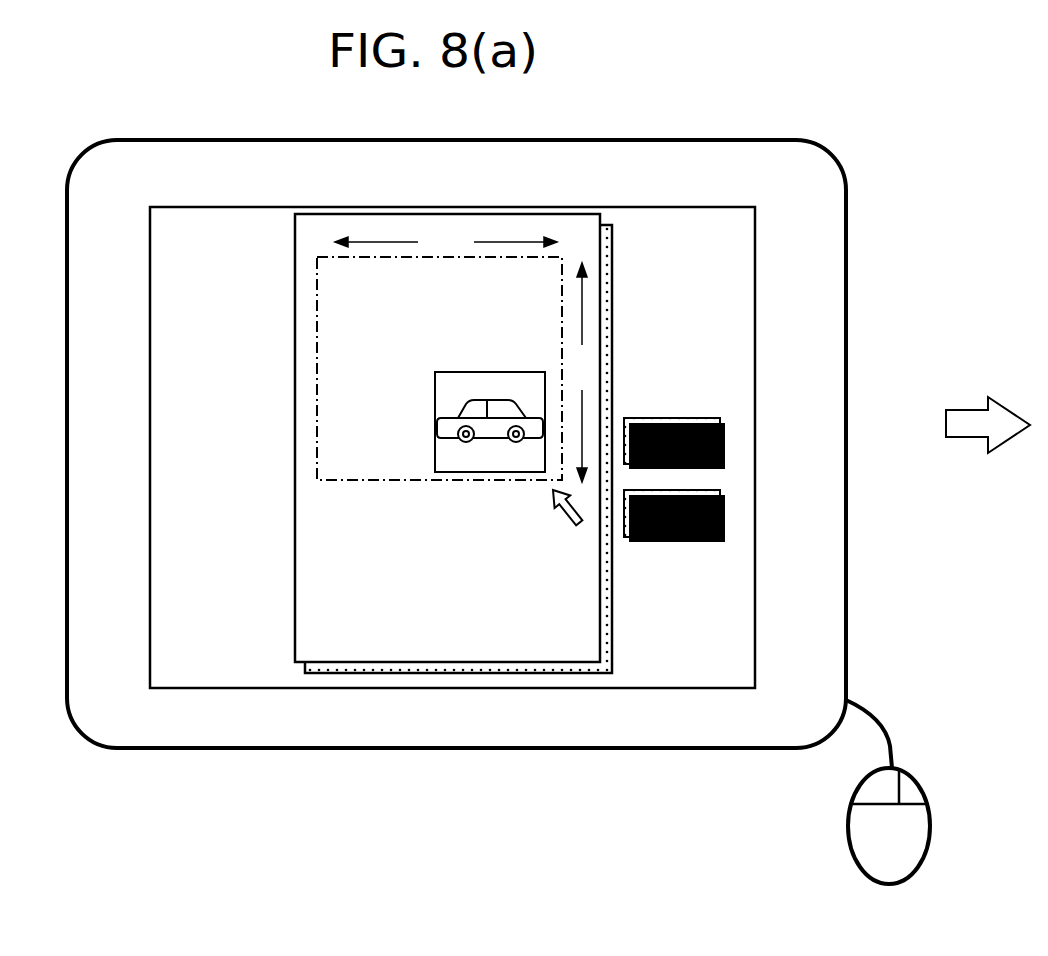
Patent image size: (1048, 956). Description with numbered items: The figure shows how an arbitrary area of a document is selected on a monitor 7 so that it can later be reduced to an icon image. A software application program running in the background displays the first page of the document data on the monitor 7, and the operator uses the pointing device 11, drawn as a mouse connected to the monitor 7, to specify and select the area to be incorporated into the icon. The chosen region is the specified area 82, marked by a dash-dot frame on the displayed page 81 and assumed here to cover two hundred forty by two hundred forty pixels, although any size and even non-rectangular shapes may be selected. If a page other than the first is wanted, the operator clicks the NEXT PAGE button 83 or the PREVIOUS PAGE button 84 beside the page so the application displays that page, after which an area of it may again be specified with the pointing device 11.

The monitor 7 is at (846, 225).
The pointing device 11 is at (930, 830).
The page display area 81 is at (295, 300).
The specified area 82 is at (317, 418).
The NEXT PAGE button 83 is at (672, 418).
The PREVIOUS PAGE button 84 is at (673, 545).